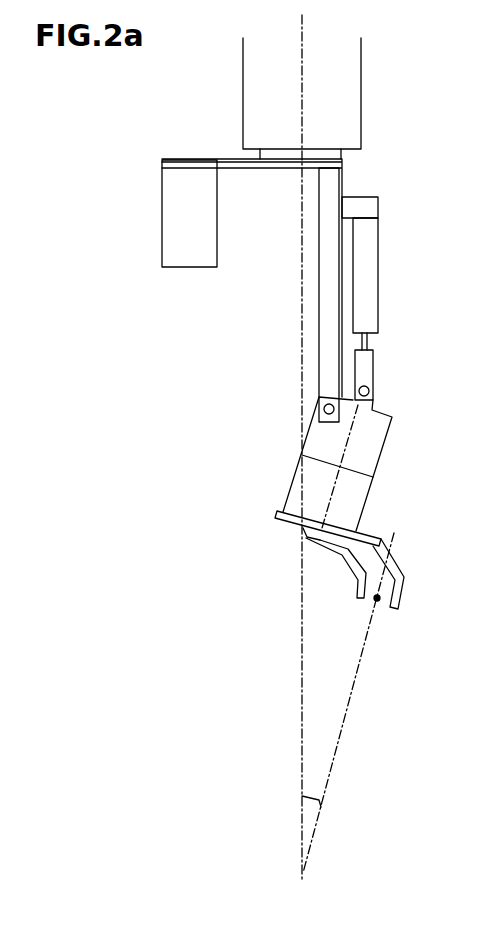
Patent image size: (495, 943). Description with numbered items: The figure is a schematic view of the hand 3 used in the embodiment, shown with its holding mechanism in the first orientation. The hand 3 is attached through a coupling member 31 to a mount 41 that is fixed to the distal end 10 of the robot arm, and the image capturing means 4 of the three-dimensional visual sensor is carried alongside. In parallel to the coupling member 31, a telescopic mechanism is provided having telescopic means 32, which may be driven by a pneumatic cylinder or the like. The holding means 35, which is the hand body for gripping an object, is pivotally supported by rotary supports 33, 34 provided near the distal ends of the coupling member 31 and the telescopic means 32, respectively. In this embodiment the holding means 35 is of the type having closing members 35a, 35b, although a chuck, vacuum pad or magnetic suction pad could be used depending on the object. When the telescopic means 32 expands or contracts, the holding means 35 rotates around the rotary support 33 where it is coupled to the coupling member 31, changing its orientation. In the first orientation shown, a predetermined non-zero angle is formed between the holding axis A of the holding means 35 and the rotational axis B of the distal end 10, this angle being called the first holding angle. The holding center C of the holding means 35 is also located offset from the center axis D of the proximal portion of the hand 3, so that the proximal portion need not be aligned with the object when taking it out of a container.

The hand 3 is at (202, 480).
The image capturing means 4 is at (162, 245).
The distal end of the robot arm 10 is at (361, 98).
The coupling member 31 is at (325, 294).
The telescopic means 32 is at (367, 342).
The rotary support 33 is at (328, 404).
The rotary support 34 is at (373, 386).
The holding means 35 is at (404, 528).
The closing member 35a is at (400, 603).
The closing member 35b is at (350, 587).
The mount 41 is at (260, 170).
The holding axis A is at (358, 668).
The rotational axis B is at (300, 673).
The holding center C is at (380, 596).
The center axis D is at (348, 435).